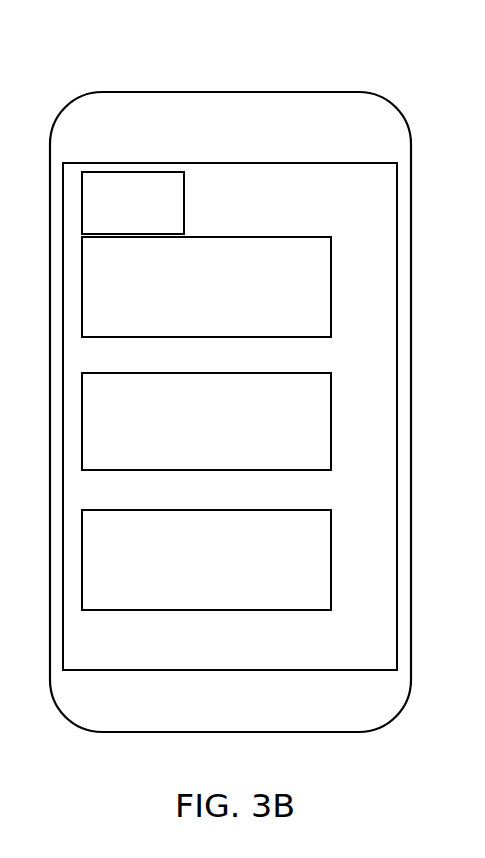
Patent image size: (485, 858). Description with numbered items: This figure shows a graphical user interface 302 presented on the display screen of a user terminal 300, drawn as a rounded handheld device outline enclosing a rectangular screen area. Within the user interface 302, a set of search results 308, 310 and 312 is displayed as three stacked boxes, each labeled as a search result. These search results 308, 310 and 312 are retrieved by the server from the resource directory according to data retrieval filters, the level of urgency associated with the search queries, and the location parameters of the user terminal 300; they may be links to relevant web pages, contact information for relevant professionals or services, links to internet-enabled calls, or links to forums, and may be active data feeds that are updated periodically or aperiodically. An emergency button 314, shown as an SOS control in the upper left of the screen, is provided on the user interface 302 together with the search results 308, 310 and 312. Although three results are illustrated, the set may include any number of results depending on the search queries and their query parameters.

The user terminal 300 is at (118, 90).
The graphical user interface 302 is at (228, 163).
The emergency button 314 is at (185, 210).
The search result 308 is at (332, 308).
The search result 310 is at (332, 422).
The search result 312 is at (332, 561).